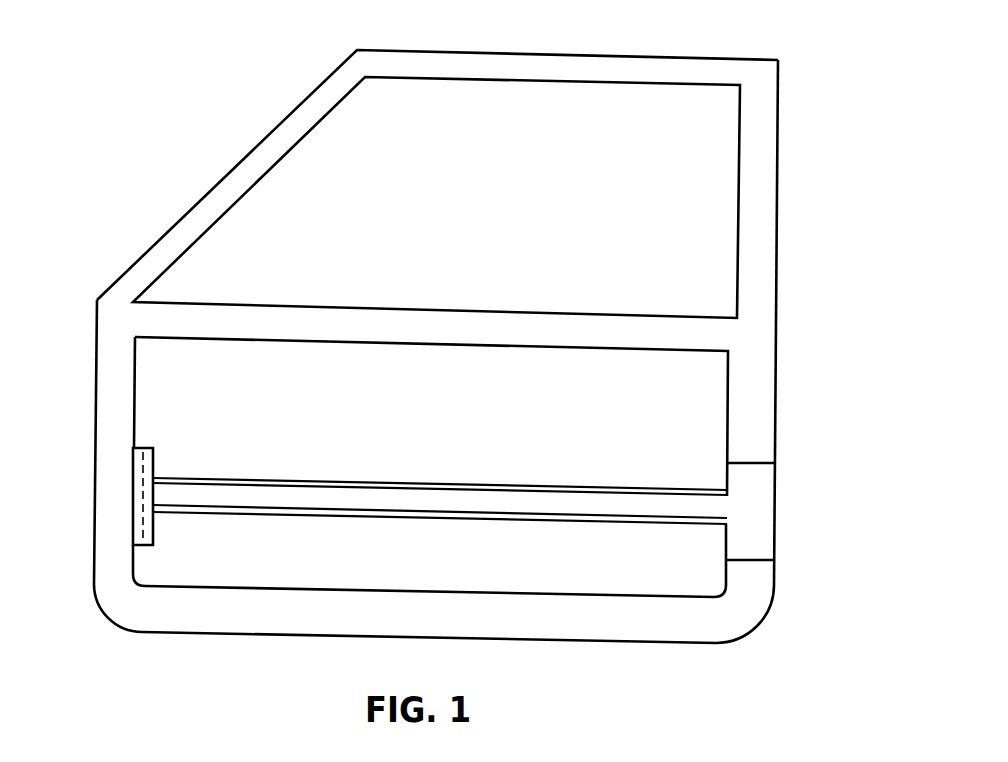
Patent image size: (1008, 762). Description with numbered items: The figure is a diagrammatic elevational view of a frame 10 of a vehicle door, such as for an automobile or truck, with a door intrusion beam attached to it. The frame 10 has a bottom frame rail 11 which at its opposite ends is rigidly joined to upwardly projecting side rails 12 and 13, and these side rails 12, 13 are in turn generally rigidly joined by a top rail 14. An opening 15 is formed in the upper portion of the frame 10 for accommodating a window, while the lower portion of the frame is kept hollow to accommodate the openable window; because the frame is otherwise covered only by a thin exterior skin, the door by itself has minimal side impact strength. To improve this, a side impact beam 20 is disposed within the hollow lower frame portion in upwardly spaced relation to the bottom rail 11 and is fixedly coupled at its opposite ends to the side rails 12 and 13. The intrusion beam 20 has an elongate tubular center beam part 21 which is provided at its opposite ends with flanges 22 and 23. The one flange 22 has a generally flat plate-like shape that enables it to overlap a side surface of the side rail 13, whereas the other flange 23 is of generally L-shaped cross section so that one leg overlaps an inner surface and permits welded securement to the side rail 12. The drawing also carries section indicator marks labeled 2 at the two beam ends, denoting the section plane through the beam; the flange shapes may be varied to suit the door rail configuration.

The frame 10 is at (442, 341).
The bottom frame rail 11 is at (657, 620).
The side rail 12 is at (120, 366).
The side rail 13 is at (773, 395).
The top rail 14 is at (417, 58).
The opening 15 is at (663, 103).
The side impact beam 20 is at (440, 481).
The elongate tubular center beam part 21 is at (352, 498).
The flange 22 is at (758, 537).
The flange 23 is at (148, 470).
The section line 2- 2 is at (172, 442).